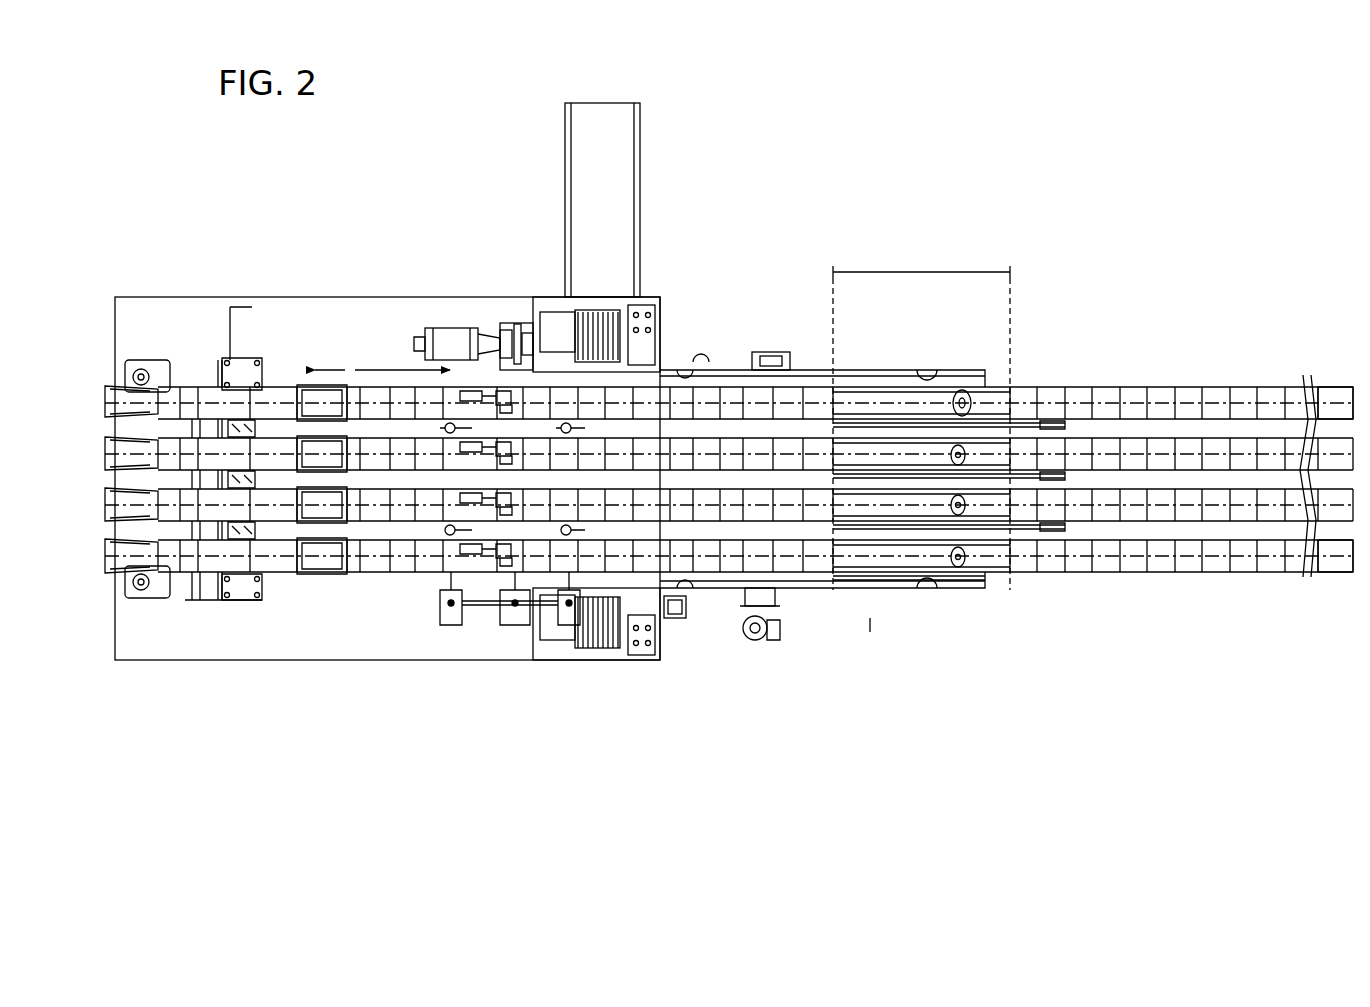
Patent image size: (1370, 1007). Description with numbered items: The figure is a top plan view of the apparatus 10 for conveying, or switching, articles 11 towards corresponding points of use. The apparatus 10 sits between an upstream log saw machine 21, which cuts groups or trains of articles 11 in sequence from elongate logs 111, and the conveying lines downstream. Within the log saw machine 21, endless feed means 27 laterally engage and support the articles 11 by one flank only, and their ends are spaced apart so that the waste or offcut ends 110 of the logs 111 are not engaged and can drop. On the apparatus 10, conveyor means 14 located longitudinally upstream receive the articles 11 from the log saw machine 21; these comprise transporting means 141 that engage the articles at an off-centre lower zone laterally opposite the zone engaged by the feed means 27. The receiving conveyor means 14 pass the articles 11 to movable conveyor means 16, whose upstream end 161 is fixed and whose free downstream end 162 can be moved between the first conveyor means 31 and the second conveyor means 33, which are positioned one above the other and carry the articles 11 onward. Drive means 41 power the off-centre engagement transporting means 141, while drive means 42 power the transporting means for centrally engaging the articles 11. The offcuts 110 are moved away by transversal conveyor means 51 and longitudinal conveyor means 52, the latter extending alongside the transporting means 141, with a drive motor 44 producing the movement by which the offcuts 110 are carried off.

The apparatus for conveying articles 10 is at (303, 280).
The articles 11 is at (368, 565).
The conveyor means for receiving the articles 14 is at (870, 630).
The movable conveyor means 16 is at (393, 363).
The log saw machine 21 is at (962, 352).
The feed means 27 is at (866, 527).
The first conveyor means 31 is at (190, 370).
The second conveyor means 33 is at (181, 419).
The drive means for the off-centre engagement conveyor means 41 is at (765, 362).
The drive means for the transporting means for centrally engaging the articles 42 is at (458, 340).
The drive motor 44 is at (682, 618).
The transversal conveyor means 51 is at (618, 135).
The longitudinal conveyor means 52 is at (774, 350).
The waste or offcut ends of the logs 110 is at (958, 400).
The logs 111 is at (1337, 393).
The transporting means 141 is at (1003, 377).
The upstream end of the movable conveyor means 161 is at (620, 300).
The free downstream end of the movable conveyor means 162 is at (343, 368).